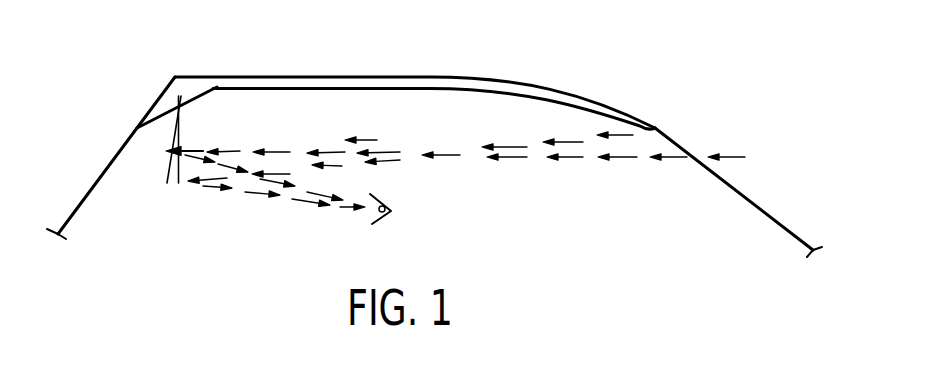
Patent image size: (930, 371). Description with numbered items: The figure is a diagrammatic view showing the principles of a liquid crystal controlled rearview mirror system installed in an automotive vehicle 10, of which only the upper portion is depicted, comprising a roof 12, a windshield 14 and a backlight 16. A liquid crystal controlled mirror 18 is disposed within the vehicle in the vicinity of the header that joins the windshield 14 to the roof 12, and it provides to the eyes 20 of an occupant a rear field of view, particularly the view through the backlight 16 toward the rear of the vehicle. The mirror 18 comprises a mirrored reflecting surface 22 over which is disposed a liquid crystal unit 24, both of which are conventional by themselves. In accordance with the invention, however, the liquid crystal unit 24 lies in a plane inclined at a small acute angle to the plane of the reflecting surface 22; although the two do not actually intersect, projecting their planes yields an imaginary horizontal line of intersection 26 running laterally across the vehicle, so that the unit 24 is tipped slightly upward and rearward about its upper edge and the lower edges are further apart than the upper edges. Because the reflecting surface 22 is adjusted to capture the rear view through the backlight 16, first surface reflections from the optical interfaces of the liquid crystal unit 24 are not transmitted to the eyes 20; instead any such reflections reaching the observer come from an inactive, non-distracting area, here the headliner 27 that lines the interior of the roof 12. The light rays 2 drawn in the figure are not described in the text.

The light rays 2 is at (377, 139).
The automotive vehicle 10 is at (433, 147).
The roof 12 is at (443, 78).
The windshield 14 is at (87, 190).
The backlight 16 is at (738, 192).
The liquid crystal controlled mirror 18 is at (206, 117).
The eyes 20 is at (372, 222).
The mirrored reflecting surface 22 is at (167, 182).
The liquid crystal unit 24 is at (178, 150).
The line of intersection 26 is at (181, 97).
The headliner 27 is at (527, 99).